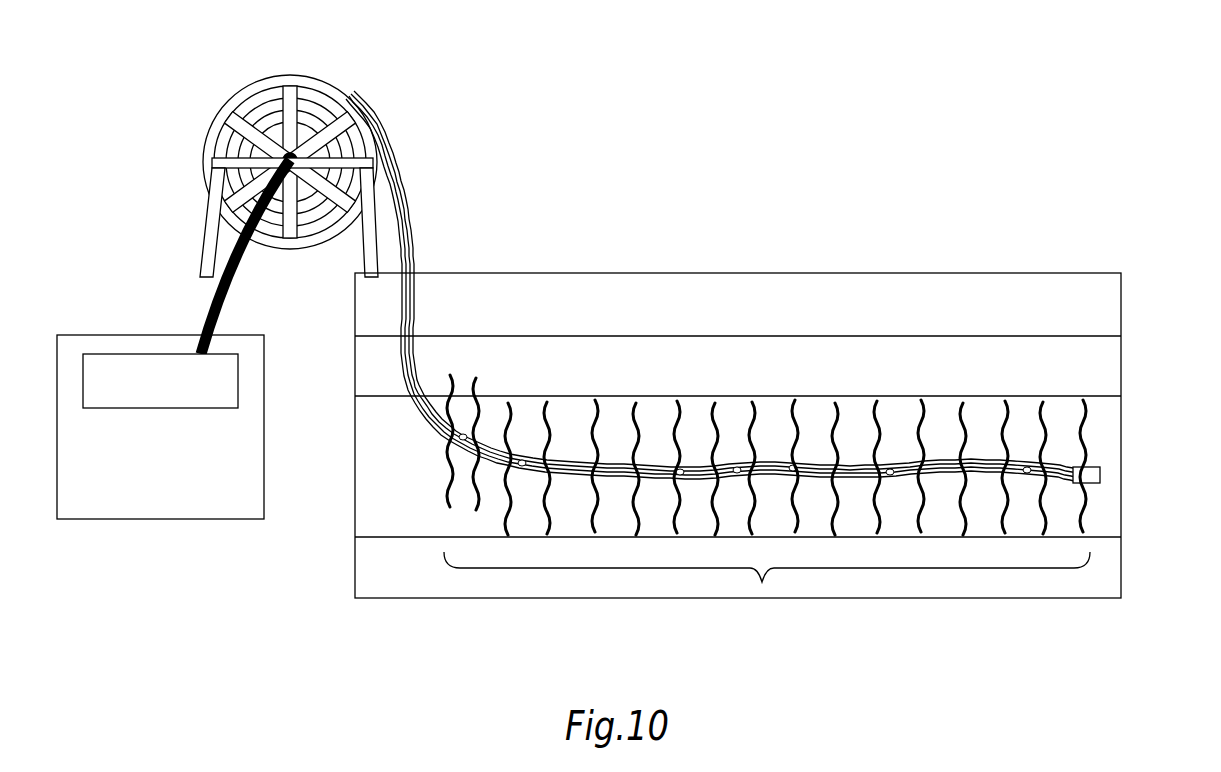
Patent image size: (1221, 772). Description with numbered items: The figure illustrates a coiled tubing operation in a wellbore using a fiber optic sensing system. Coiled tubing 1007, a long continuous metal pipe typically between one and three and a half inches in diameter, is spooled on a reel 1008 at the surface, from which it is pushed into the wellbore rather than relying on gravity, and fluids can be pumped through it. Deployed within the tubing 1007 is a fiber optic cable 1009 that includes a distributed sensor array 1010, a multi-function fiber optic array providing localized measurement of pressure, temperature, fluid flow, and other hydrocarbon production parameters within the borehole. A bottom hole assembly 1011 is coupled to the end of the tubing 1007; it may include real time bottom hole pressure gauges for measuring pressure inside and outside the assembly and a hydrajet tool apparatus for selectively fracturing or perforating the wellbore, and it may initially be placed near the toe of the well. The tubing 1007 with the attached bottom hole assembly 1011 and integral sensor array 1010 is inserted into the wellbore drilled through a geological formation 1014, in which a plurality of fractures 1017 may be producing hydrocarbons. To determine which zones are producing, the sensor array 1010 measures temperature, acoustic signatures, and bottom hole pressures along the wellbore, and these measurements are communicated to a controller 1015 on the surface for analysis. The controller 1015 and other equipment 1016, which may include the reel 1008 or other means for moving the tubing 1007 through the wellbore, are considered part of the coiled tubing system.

The coiled tubing 1007 is at (416, 214).
The reel 1008 is at (290, 75).
The fiber optic cable 1009 is at (412, 264).
The distributed sensor array 1010 is at (762, 584).
The bottom hole assembly 1011 is at (1102, 476).
The geological formation 1014 is at (1116, 364).
The controller 1015 is at (238, 362).
The other equipment 1016 is at (160, 334).
The fractures 1017 is at (874, 416).